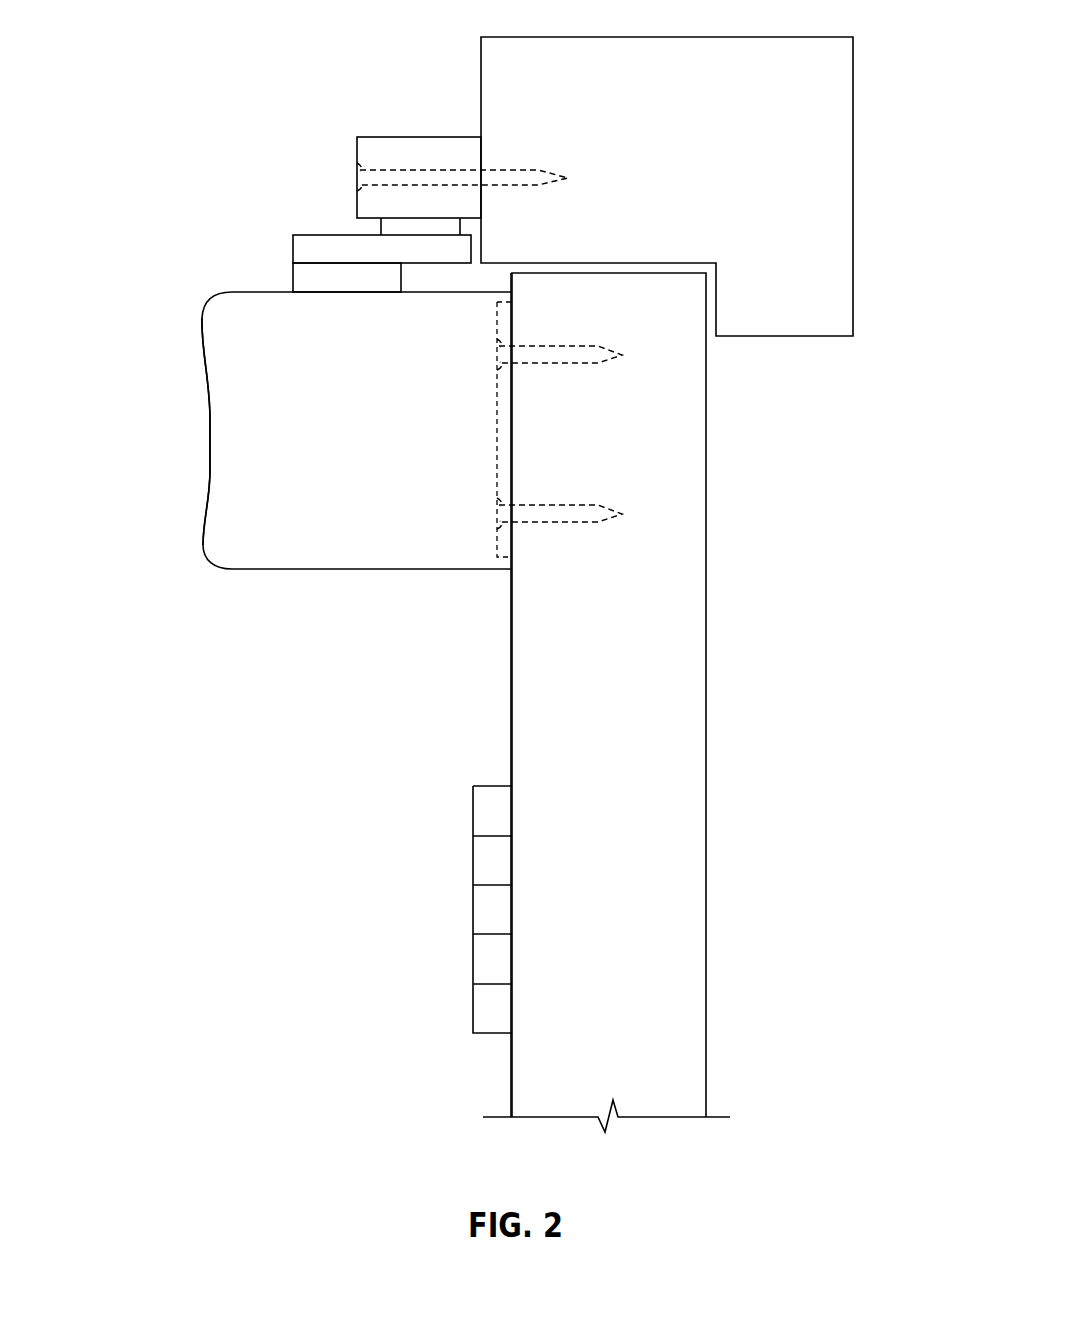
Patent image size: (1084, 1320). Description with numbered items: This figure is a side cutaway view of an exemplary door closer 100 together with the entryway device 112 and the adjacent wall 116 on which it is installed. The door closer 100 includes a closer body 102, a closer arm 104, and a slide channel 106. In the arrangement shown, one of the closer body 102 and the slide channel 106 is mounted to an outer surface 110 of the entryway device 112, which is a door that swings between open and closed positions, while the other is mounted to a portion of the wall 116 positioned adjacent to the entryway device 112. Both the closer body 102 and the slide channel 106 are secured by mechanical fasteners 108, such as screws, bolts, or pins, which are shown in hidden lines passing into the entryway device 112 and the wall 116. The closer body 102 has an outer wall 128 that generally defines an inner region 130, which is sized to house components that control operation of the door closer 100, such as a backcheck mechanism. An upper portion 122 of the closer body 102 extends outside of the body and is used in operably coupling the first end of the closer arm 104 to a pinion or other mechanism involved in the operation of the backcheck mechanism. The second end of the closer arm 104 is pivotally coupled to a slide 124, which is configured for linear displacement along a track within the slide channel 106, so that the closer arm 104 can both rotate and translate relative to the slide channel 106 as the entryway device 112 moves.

The door closer 100 is at (183, 216).
The closer body 102 is at (228, 486).
The closer arm 104 is at (307, 247).
The slide channel 106 is at (382, 137).
The mechanical fasteners 108 is at (362, 177).
The outer surface 110 is at (511, 713).
The entryway device 112 is at (632, 683).
The wall 116 is at (823, 170).
The upper portion 122 is at (302, 278).
The slide 124 is at (402, 227).
The outer wall 128 is at (208, 432).
The inner region 130 is at (370, 437).